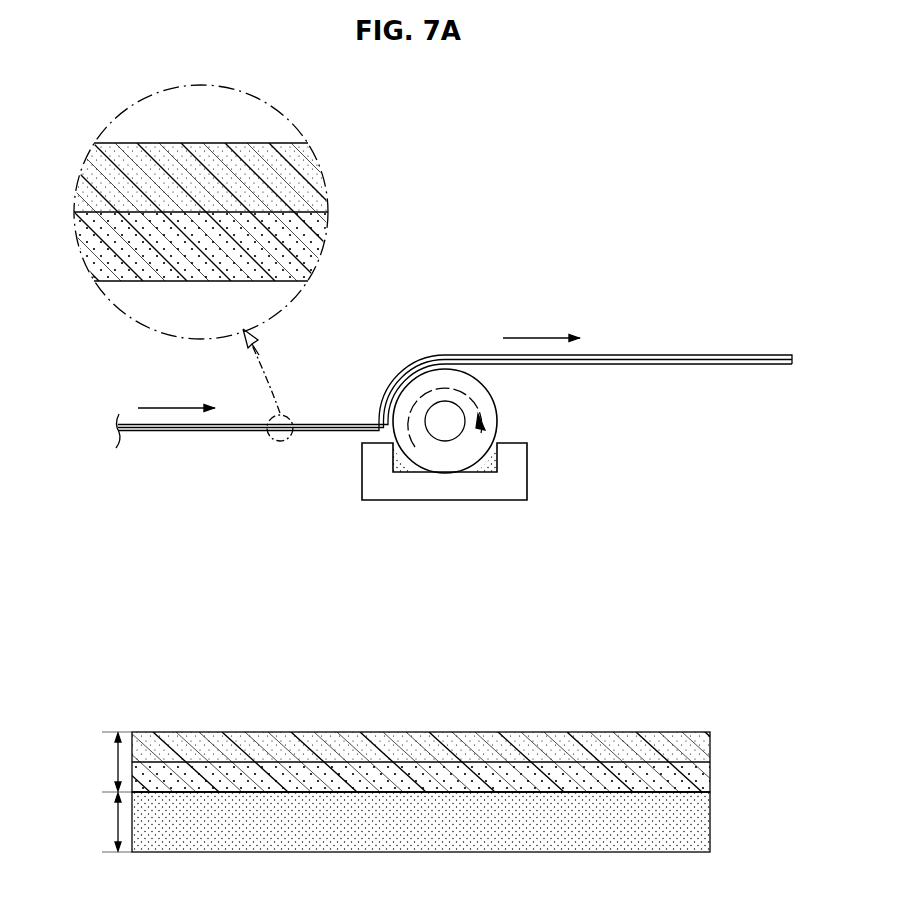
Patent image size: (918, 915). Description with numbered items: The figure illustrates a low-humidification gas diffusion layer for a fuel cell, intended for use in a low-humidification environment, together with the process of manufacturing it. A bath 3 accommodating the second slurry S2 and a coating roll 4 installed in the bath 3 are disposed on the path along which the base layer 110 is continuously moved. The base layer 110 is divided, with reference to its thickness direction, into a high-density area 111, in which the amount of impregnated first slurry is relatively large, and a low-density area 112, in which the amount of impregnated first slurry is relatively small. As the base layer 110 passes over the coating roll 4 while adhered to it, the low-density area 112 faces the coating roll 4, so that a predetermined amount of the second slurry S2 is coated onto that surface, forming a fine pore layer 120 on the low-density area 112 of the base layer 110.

The bath 3 is at (449, 485).
The coating roll 4 is at (440, 382).
The second slurry S2 is at (496, 458).
The base layer 110 is at (718, 355).
The high-density area 111 is at (298, 182).
The low-density area 112 is at (312, 247).
The fine pore layer 120 is at (718, 365).